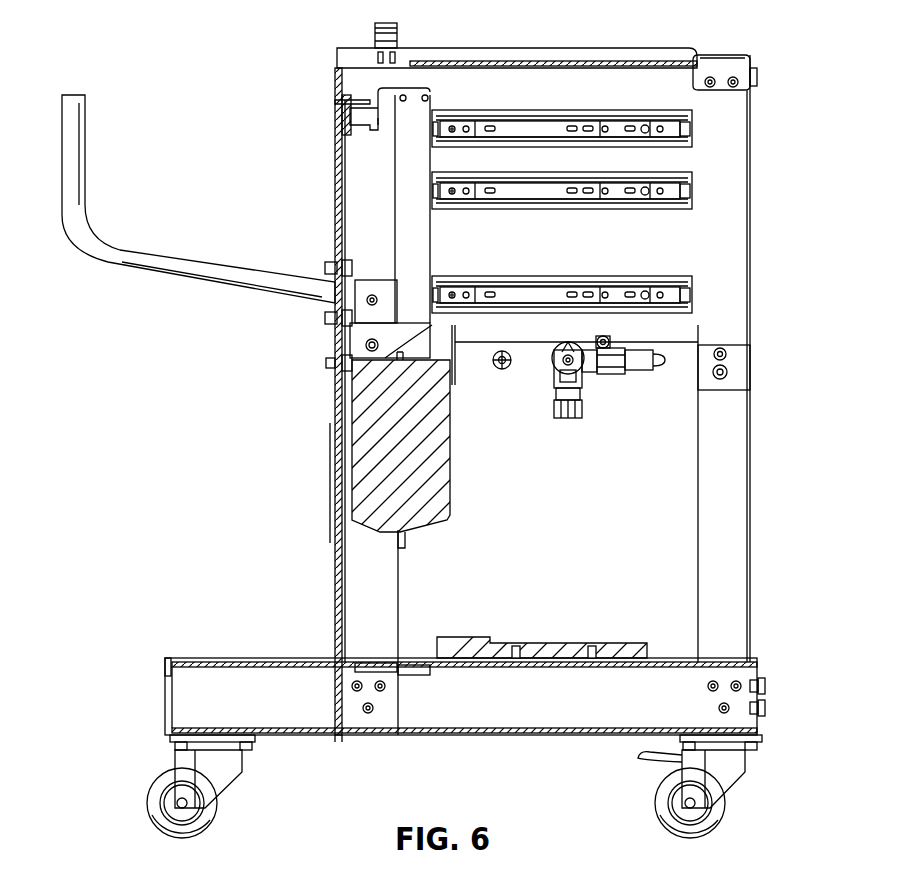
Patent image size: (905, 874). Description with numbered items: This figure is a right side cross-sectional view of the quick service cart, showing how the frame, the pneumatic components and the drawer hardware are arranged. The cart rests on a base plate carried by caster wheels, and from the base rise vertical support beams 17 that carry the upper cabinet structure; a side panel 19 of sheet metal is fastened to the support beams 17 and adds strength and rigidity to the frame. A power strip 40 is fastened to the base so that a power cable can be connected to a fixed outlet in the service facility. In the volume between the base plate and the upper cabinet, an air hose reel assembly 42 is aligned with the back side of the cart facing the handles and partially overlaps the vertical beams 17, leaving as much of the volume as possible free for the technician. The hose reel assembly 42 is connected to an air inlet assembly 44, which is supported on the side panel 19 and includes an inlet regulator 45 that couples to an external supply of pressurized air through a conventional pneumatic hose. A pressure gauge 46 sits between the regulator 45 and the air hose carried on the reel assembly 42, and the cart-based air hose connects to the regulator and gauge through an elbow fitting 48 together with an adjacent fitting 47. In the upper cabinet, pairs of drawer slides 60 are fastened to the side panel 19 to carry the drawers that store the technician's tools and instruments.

The support beams 17 is at (360, 570).
The side panel 19 is at (355, 362).
The power strip 40 is at (575, 660).
The air hose reel assembly 42 is at (370, 465).
The air inlet assembly 44 is at (590, 368).
The inlet regulator 45 is at (585, 406).
The pressure gauge 46 is at (553, 356).
The coupling 47 is at (635, 370).
The elbow fitting 48 is at (703, 350).
The drawer slides 60 is at (690, 280).